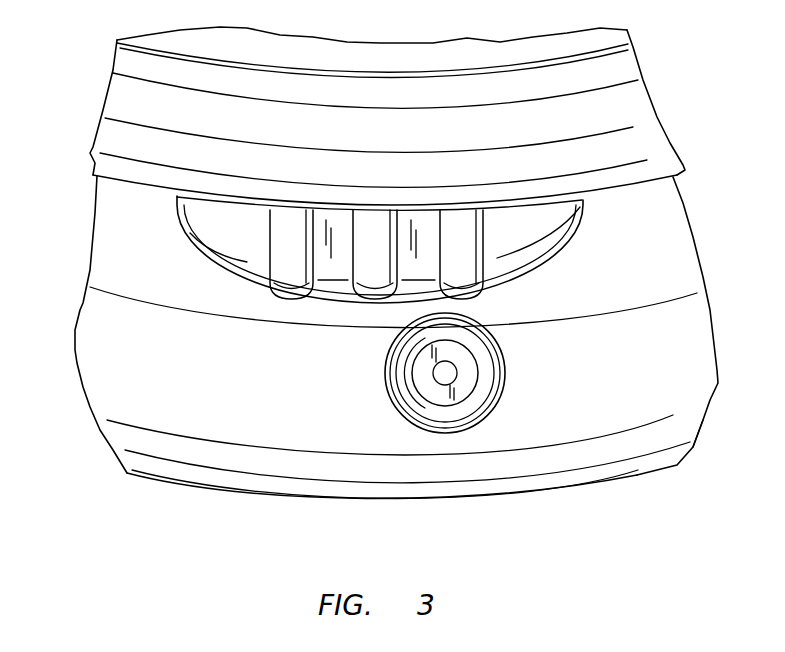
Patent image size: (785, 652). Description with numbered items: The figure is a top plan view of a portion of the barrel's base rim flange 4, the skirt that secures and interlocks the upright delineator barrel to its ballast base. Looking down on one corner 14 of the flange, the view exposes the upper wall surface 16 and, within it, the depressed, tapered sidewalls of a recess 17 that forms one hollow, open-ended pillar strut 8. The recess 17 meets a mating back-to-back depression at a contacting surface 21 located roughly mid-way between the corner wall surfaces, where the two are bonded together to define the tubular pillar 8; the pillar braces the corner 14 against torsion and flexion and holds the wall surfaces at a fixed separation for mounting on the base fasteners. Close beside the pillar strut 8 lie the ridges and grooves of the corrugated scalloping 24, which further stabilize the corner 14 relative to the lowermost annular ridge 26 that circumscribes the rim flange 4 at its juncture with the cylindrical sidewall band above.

The base rim flange 4 is at (708, 447).
The pillar strut 8 is at (534, 378).
The corner 14 is at (203, 490).
The upper wall surface 16 is at (112, 352).
The recess 17 is at (483, 394).
The contacting surface 21 is at (423, 383).
The scalloping 24 is at (183, 210).
The annular ridge 26 is at (673, 183).